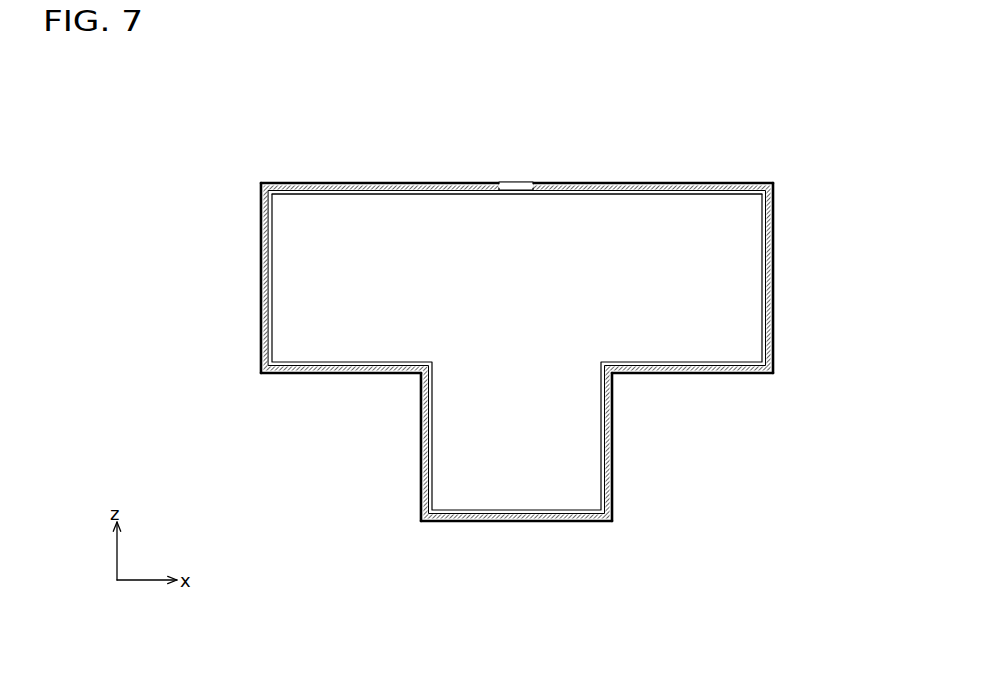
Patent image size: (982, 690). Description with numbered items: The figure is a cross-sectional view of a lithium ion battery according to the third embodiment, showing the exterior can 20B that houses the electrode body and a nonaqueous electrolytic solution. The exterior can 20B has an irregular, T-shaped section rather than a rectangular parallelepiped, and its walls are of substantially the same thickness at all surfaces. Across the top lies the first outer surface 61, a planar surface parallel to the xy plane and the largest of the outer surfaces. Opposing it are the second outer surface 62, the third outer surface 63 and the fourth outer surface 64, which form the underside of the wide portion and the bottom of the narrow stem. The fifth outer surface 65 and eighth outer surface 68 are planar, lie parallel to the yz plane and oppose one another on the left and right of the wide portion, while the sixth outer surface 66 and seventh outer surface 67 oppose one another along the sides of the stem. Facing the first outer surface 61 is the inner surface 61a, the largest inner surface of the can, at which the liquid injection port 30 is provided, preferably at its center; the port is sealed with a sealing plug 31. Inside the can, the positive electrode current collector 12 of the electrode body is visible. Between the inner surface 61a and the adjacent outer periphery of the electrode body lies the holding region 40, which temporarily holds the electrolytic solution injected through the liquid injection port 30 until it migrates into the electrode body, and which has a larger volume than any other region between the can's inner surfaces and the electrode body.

The positive electrode current collector 12 is at (293, 222).
The exterior can 20B is at (733, 183).
The liquid injection port 30 is at (527, 183).
The sealing plug 31 is at (519, 183).
The holding region 40 is at (381, 185).
The first outer surface 61 is at (677, 183).
The inner surface 61a is at (464, 204).
The second outer surface 62 is at (328, 373).
The third outer surface 63 is at (688, 373).
The fourth outer surface 64 is at (517, 521).
The fifth outer surface 65 is at (260, 258).
The sixth outer surface 66 is at (421, 473).
The seventh outer surface 67 is at (613, 475).
The eighth outer surface 68 is at (773, 275).